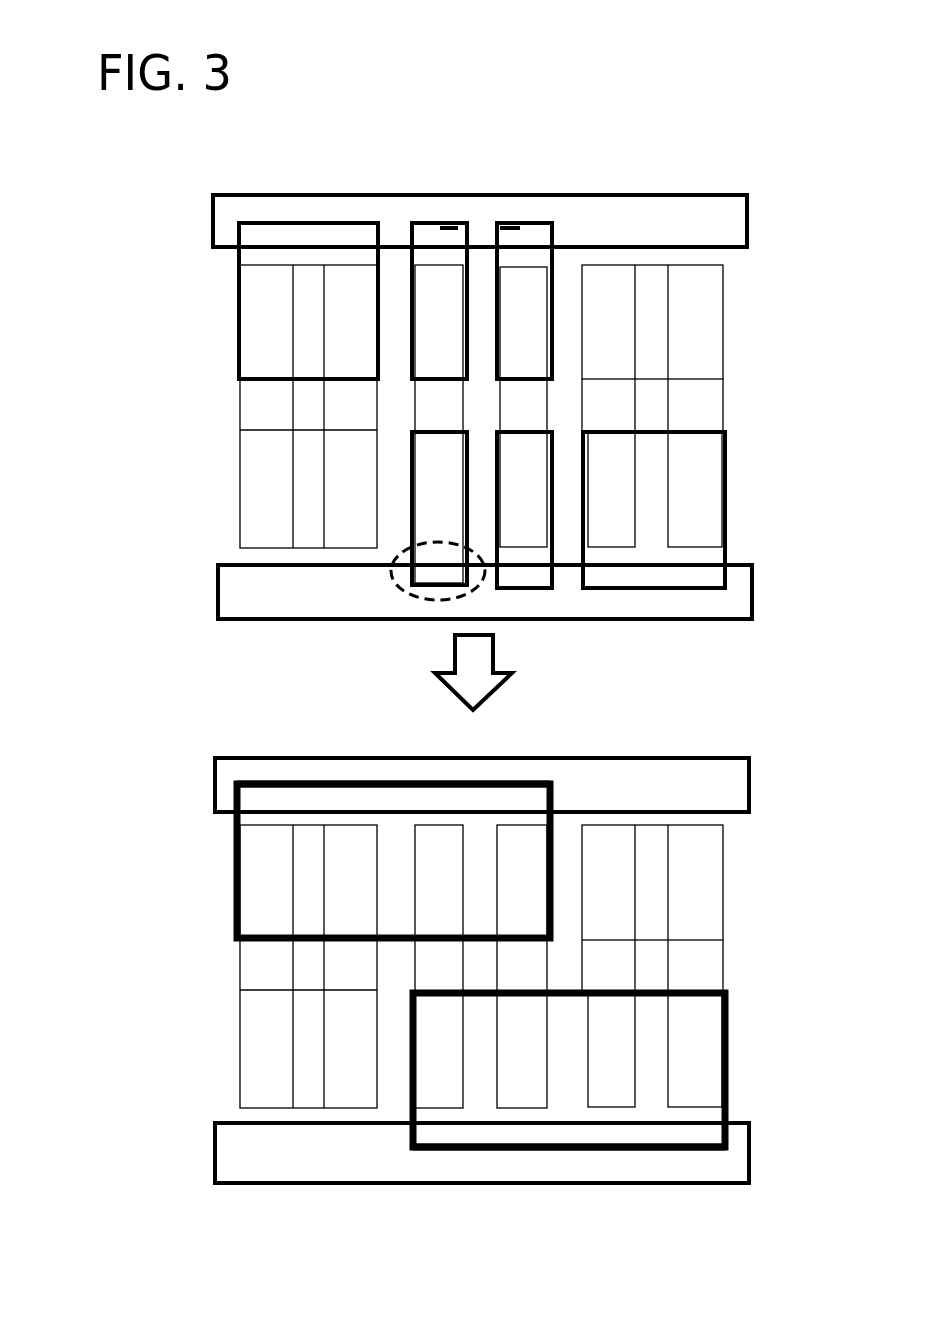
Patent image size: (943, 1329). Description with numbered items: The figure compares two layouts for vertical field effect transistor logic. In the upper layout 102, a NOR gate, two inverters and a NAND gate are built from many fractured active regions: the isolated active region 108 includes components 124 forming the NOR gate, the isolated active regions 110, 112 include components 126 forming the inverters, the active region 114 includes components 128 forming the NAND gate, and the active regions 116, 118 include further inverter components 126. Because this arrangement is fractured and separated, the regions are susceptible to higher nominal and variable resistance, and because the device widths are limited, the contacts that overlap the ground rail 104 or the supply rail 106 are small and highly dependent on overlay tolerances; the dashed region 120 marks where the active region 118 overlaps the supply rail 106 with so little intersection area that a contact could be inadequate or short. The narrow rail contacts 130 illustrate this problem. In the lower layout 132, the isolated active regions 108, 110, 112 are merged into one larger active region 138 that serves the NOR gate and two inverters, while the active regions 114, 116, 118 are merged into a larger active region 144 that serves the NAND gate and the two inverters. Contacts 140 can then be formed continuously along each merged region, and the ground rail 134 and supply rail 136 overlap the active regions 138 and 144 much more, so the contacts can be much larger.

The layout 102 is at (130, 345).
The ground rail 104 is at (228, 215).
The supply rail 106 is at (242, 592).
The isolated active region 108 is at (238, 253).
The isolated active region 110 is at (438, 227).
The isolated active region 112 is at (503, 232).
The active region 114 is at (722, 562).
The active region 116 is at (550, 522).
The active region 118 is at (410, 522).
The region 120 is at (440, 600).
The components 124 is at (345, 390).
The components 126 is at (525, 408).
The components 128 is at (620, 400).
The power rail contacts 130 is at (503, 230).
The layout 132 is at (140, 924).
The ground rail 134 is at (228, 787).
The supply rail 136 is at (245, 1162).
The active region 138 is at (237, 820).
The contacts 140 is at (438, 797).
The active region 144 is at (728, 1113).